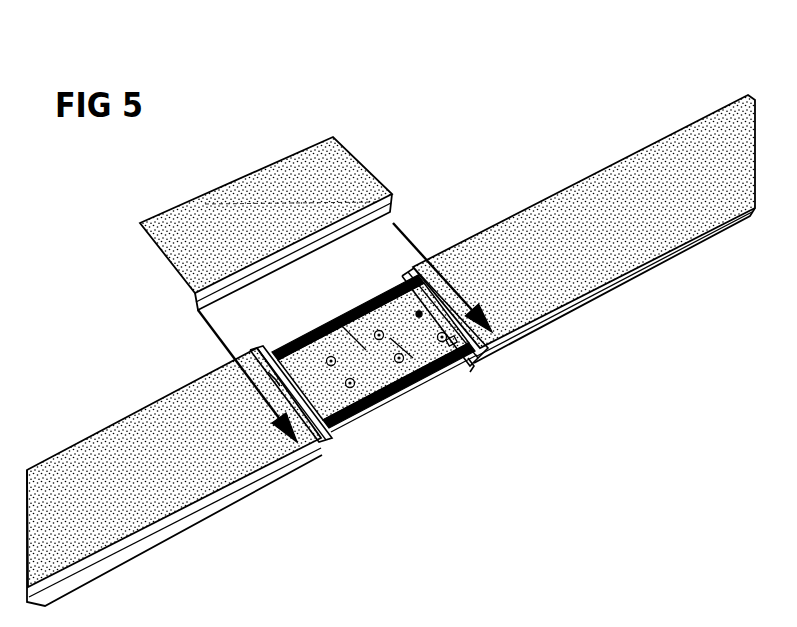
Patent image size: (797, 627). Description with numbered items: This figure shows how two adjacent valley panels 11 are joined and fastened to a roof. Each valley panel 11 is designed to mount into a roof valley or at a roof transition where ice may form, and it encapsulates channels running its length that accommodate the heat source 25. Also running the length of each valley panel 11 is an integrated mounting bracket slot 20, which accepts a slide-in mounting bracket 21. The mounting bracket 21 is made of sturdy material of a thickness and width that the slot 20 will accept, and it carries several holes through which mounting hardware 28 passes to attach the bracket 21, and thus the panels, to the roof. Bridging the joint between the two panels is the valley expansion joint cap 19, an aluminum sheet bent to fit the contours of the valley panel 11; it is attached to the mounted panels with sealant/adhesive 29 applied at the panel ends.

The valley panel 11 is at (132, 463).
The valley expansion joint cap 19 is at (285, 191).
The integrated mounting bracket slot 20 is at (419, 312).
The mounting bracket 21 is at (330, 388).
The heat source 25 is at (412, 378).
The mounting hardware 28 is at (443, 368).
The sealant/adhesive 29 is at (327, 440).